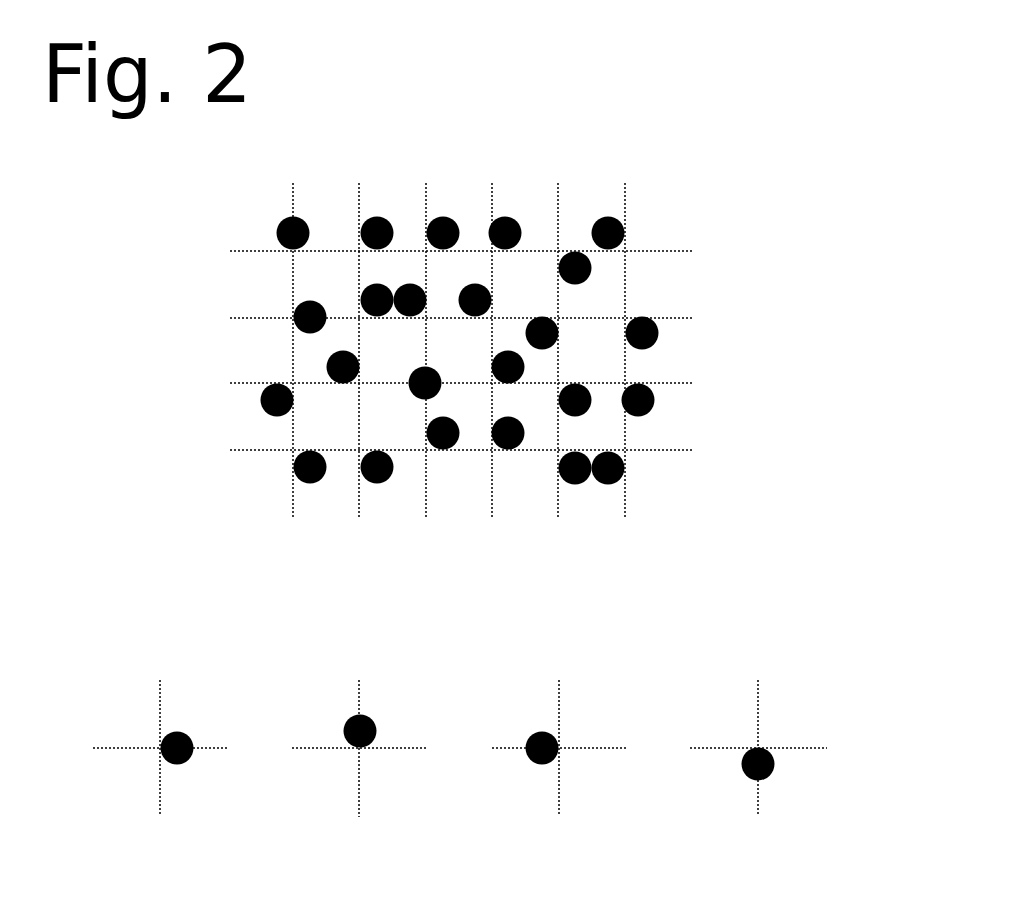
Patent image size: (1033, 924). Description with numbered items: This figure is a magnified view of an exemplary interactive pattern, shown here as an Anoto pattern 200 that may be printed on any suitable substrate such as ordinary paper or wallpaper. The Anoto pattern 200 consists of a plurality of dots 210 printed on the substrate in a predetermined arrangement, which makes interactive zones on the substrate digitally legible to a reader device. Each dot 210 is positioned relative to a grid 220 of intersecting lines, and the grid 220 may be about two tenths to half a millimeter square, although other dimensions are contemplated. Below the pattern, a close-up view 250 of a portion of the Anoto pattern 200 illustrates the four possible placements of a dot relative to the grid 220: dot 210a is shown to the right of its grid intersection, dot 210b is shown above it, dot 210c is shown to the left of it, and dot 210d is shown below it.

The Anoto pattern 200 is at (504, 313).
The dot 210 is at (511, 218).
The grid 220 is at (689, 250).
The close-up view 250 is at (476, 695).
The dot 210a is at (183, 732).
The dot 210b is at (373, 717).
The dot 210c is at (556, 738).
The dot 210d is at (764, 746).